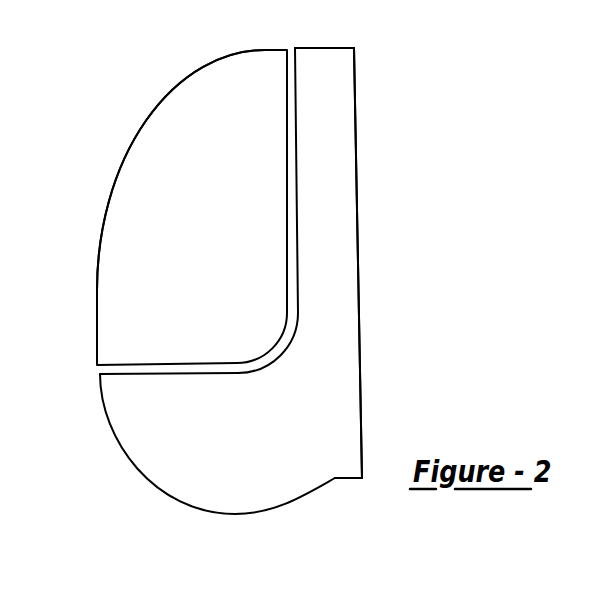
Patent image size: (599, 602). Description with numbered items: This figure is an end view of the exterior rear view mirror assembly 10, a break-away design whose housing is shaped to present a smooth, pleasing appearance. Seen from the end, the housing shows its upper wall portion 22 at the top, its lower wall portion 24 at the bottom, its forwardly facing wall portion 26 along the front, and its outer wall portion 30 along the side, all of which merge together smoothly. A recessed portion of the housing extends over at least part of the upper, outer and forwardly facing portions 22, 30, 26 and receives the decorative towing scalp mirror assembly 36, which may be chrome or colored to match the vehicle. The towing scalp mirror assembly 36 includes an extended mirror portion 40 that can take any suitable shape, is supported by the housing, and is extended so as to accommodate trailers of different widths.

The exterior rear view mirror assembly 10 is at (366, 151).
The upper wall portion 22 is at (320, 48).
The lower wall portion 24 is at (336, 480).
The forwardly facing wall portion 26 is at (110, 428).
The outer wall portion 30 is at (333, 247).
The towing scalp mirror assembly 36 is at (147, 113).
The extended mirror portion 40 is at (127, 275).